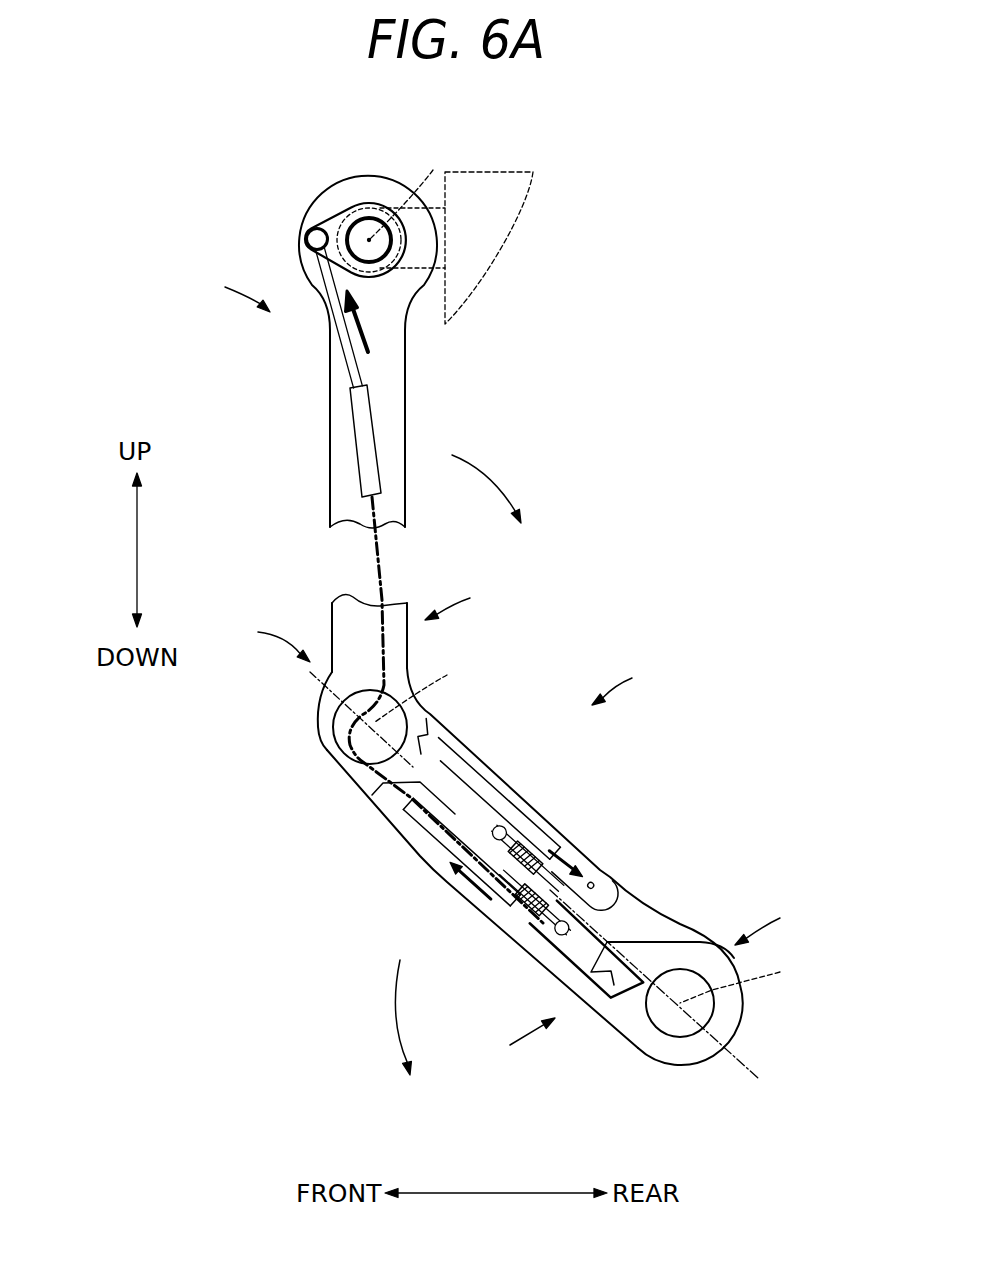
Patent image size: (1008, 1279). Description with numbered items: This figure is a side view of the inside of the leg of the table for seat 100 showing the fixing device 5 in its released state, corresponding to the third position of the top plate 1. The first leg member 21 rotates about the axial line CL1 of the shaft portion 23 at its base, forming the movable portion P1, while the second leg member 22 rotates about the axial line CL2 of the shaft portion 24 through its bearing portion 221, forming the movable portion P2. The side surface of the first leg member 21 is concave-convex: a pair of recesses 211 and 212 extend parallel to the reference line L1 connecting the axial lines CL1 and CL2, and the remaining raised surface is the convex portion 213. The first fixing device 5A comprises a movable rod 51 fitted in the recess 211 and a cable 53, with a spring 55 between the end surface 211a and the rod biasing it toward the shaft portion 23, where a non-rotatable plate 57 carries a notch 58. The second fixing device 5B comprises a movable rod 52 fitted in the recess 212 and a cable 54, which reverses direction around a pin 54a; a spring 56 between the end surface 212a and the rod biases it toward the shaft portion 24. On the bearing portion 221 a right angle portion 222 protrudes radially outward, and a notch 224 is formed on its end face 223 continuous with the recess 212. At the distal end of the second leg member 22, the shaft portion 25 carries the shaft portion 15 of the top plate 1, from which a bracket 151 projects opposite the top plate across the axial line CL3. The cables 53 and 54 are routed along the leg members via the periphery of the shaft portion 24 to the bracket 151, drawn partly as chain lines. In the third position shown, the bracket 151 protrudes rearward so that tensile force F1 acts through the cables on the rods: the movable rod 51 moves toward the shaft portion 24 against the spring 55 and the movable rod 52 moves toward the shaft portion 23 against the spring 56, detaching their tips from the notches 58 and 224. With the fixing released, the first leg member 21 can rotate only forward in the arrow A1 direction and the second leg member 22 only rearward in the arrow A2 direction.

The top plate 1 is at (492, 172).
The fixing device 5 is at (527, 851).
The first fixing device 5A is at (514, 1042).
The second fixing device 5B is at (423, 625).
The shaft portion 15 is at (372, 202).
The first leg member 21 is at (647, 908).
The second leg member 22 is at (330, 440).
The shaft portion 23 is at (673, 1038).
The shaft portion 24 is at (334, 722).
The shaft portion 25 is at (348, 226).
The movable rod 51 is at (600, 975).
The movable rod 52 is at (508, 797).
The cable 53 is at (443, 840).
The cable 54 is at (593, 858).
The pin 54a is at (600, 884).
The spring 55 is at (548, 935).
The spring 56 is at (540, 842).
The plate 57 is at (680, 945).
The notch 58 is at (606, 980).
The table for seat 100 is at (224, 292).
The bracket 151 is at (305, 238).
The recess 211 is at (580, 950).
The end surface 211a is at (505, 912).
The recess 212 is at (490, 787).
The end surface 212a is at (545, 858).
The convex portion 213 is at (405, 833).
The bearing portion 221 is at (323, 752).
The right angle portion 222 is at (352, 782).
The end face 223 is at (384, 805).
The notch 224 is at (415, 746).
The arrow A1 direction A1 is at (413, 1038).
The arrow A2 direction A2 is at (494, 489).
The axial line CL1 is at (755, 979).
The axial line CL2 is at (423, 684).
The axial line CL3 is at (416, 190).
The tensile force F1 is at (371, 321).
The reference line L1 is at (671, 994).
The movable portion P1 is at (776, 922).
The movable portion P2 is at (267, 641).